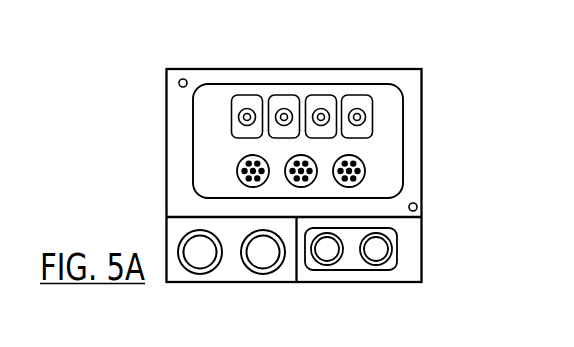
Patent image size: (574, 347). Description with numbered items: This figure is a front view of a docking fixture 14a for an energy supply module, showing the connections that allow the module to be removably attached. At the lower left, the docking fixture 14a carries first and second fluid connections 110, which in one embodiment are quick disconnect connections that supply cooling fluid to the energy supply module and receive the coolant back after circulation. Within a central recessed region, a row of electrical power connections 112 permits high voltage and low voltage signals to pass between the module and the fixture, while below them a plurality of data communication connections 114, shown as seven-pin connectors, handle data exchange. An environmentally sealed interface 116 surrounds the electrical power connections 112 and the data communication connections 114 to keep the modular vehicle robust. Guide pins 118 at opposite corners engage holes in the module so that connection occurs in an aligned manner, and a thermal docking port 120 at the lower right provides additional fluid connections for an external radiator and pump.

The docking fixture 14a is at (452, 86).
The fluid connections 110 is at (248, 268).
The electrical power connections 112 is at (274, 92).
The data communication connections 114 is at (366, 171).
The environmentally sealed interface 116 is at (402, 104).
The guide pins 118 is at (183, 79).
The thermal docking port 120 is at (355, 270).